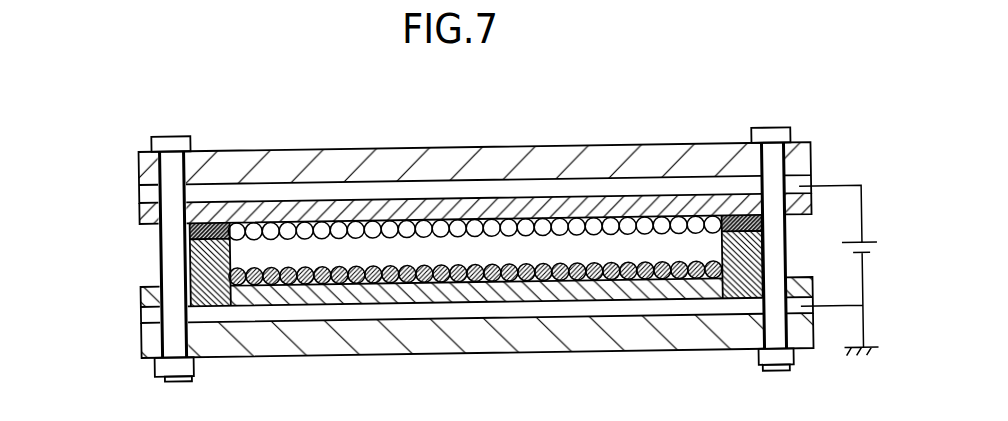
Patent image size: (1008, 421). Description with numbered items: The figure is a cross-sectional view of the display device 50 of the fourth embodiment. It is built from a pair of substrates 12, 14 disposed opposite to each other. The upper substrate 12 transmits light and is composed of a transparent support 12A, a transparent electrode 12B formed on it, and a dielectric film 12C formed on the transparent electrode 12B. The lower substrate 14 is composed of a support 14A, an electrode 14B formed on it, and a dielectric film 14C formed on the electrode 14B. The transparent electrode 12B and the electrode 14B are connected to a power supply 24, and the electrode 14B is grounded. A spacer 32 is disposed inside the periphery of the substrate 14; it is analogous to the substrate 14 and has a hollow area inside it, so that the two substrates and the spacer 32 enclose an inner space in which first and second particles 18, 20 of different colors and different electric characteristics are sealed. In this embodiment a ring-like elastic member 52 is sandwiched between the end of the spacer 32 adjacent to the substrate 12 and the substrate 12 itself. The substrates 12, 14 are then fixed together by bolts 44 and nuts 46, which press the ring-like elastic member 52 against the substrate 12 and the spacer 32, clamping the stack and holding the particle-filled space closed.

The substrate 12 is at (83, 153).
The transparent support 12A is at (142, 169).
The transparent electrode 12B is at (142, 197).
The dielectric film 12C is at (142, 216).
The substrate 14 is at (83, 283).
The support 14A is at (142, 342).
The electrode 14B is at (142, 316).
The dielectric film 14C is at (142, 294).
The first particles 18 is at (357, 226).
The second particles 20 is at (353, 284).
The power supply 24 is at (845, 254).
The spacer 32 is at (188, 255).
The bolts 44 is at (770, 128).
The nuts 46 is at (795, 354).
The display device 50 is at (488, 113).
The ring-like elastic member 52 is at (745, 221).